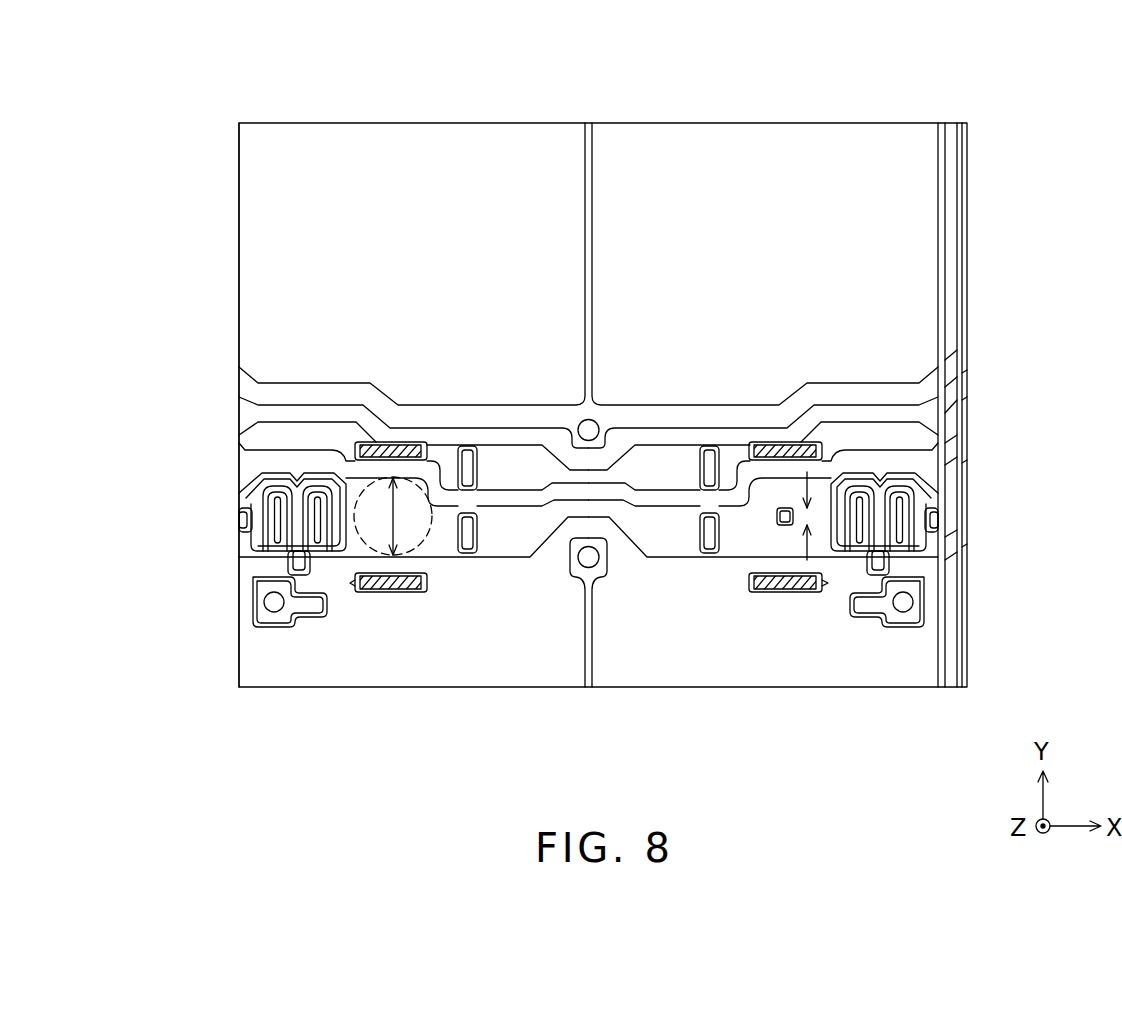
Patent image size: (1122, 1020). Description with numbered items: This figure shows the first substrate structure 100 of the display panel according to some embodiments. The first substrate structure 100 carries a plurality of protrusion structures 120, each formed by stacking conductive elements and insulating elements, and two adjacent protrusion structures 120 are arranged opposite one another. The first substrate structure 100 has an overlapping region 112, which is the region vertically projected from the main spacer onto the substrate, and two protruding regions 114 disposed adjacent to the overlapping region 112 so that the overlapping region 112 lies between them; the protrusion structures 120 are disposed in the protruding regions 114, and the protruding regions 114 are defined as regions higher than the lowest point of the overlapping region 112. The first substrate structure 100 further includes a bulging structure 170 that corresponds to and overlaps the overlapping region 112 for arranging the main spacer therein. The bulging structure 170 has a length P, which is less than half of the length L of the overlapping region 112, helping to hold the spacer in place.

The first substrate structure 100 is at (241, 110).
The protrusion structure 120 is at (781, 443).
The protruding region 114 is at (402, 443).
The overlapping region 112 is at (428, 530).
The bulging structure 170 is at (777, 518).
The length of the overlapping region L is at (392, 520).
The length of the bulging structure P is at (810, 528).